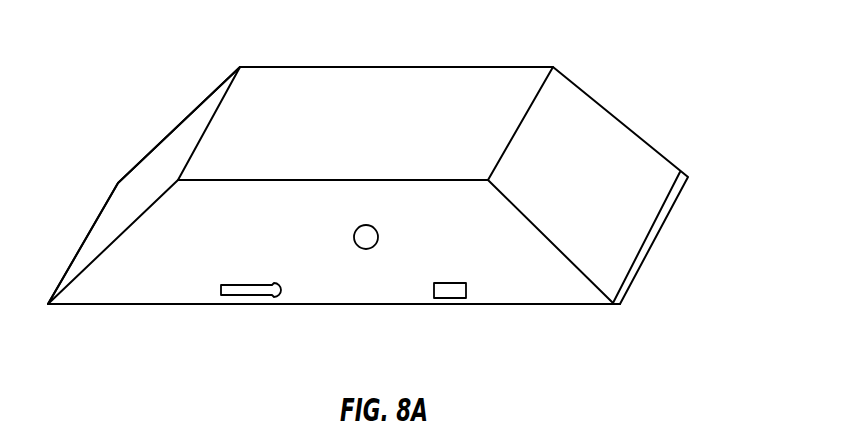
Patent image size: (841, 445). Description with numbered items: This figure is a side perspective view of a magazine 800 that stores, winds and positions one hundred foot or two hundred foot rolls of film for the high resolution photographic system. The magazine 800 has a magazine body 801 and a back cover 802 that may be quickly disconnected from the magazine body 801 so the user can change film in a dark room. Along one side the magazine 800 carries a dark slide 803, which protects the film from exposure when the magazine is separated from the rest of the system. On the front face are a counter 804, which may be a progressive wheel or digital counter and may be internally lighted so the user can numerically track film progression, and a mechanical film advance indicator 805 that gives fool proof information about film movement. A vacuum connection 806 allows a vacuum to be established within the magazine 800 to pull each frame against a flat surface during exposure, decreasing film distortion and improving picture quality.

The magazine 800 is at (168, 44).
The magazine body 801 is at (112, 218).
The back cover 802 is at (131, 290).
The dark slide 803 is at (655, 247).
The counter 804 is at (450, 292).
The mechanical film advance indicator 805 is at (363, 250).
The vacuum connection 806 is at (250, 296).